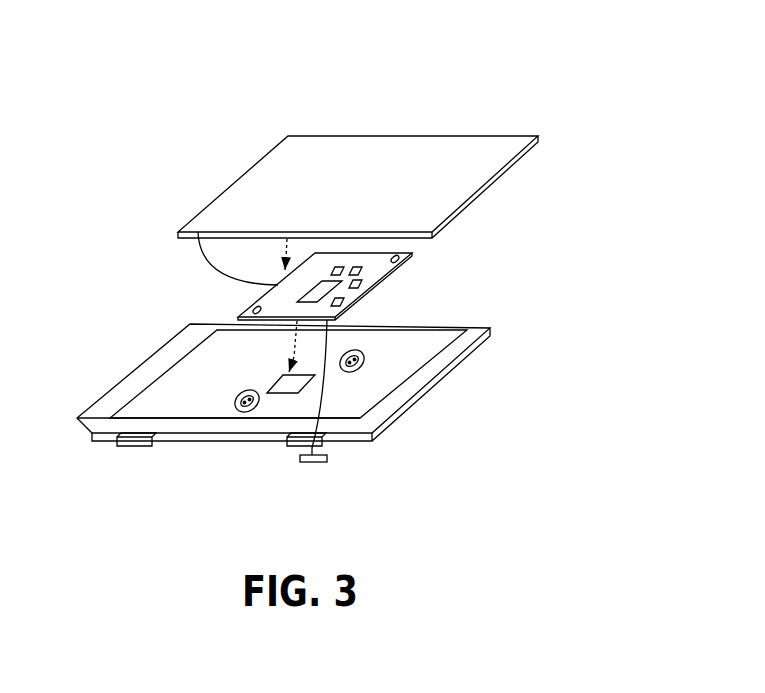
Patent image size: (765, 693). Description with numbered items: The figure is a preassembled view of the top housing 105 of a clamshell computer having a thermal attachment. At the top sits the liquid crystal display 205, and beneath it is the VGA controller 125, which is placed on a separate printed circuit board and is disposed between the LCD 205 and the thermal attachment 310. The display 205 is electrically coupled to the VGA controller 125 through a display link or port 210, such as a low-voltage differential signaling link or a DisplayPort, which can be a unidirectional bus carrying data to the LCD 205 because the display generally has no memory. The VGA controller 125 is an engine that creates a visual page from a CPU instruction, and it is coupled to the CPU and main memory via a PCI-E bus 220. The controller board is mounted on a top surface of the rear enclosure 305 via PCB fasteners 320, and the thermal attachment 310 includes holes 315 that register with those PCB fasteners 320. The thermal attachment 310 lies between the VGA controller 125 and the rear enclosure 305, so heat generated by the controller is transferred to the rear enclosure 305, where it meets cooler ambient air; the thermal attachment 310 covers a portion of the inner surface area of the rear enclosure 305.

The top housing 105 is at (543, 82).
The liquid crystal display 205 is at (353, 192).
The display link or port 210 is at (222, 281).
The VGA controller 125 is at (388, 298).
The rear enclosure 305 is at (470, 326).
The thermal attachment 310 is at (437, 355).
The PCI-E bus 220 is at (312, 391).
The holes 315 is at (338, 361).
The PCB fasteners 320 is at (233, 407).